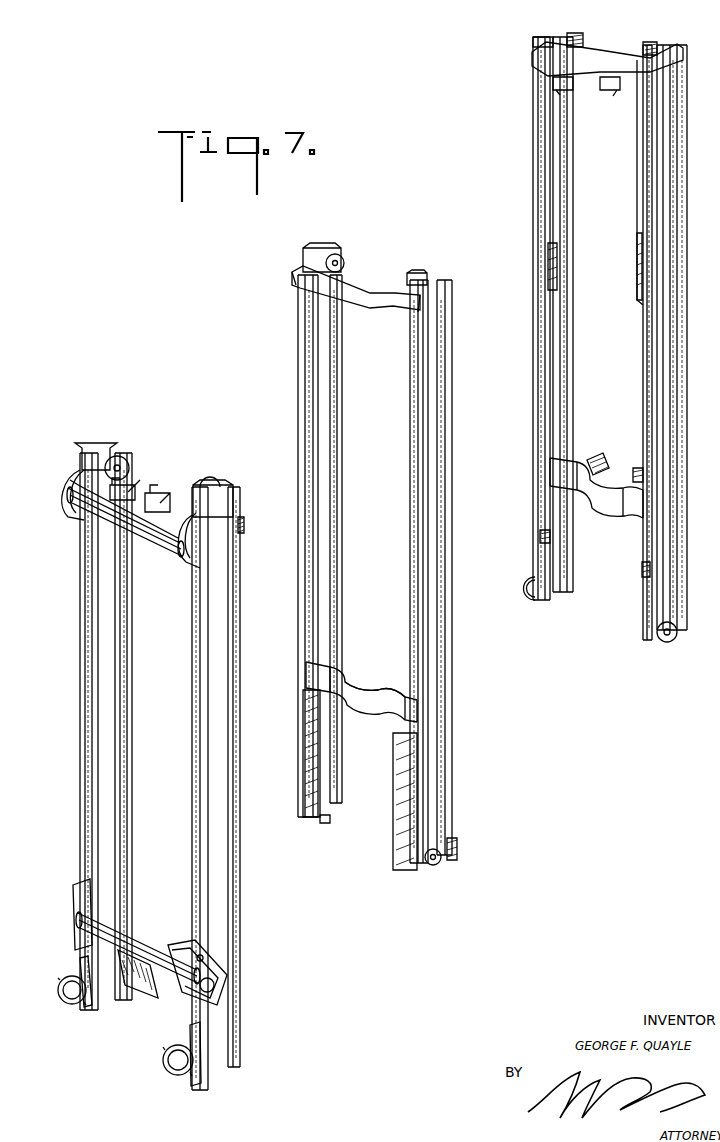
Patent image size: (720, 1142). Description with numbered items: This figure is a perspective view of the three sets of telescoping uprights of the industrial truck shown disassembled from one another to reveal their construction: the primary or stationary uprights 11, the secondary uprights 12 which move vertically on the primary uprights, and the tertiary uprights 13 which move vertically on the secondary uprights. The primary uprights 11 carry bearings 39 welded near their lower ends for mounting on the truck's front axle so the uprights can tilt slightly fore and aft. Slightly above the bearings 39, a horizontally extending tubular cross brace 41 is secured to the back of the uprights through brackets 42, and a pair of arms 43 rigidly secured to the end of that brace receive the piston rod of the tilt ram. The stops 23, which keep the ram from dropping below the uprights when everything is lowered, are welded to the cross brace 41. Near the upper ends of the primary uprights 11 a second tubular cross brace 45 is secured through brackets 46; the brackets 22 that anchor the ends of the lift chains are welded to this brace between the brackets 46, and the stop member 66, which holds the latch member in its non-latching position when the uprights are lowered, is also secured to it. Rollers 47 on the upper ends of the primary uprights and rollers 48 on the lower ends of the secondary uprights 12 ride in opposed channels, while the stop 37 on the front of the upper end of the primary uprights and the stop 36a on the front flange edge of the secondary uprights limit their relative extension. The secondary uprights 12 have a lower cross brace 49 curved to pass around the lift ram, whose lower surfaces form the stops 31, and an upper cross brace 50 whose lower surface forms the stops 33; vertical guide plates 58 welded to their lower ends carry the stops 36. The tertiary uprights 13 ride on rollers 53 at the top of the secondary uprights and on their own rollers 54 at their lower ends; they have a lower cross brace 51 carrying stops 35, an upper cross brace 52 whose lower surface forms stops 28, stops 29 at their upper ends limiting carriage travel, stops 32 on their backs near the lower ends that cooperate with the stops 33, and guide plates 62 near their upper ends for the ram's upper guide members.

The primary uprights 11 is at (187, 694).
The secondary uprights 12 is at (404, 561).
The tertiary uprights 13 is at (634, 355).
The brackets 22 is at (158, 490).
The stops 23 is at (143, 1000).
The stops 28 is at (648, 85).
The stops 29 is at (648, 46).
The stops 31 is at (370, 725).
The stops 32 is at (540, 537).
The stops 33 is at (297, 283).
The stops 35 is at (636, 468).
The stops 36 is at (388, 850).
The stop 36a is at (459, 848).
The stop 37 is at (244, 521).
The bearings 39 is at (157, 1052).
The tubular cross brace 41 is at (143, 945).
The brackets 42 is at (76, 905).
The arms 43 is at (244, 958).
The tubular cross brace 45 is at (156, 540).
The brackets 46 is at (76, 476).
The rollers 47 is at (122, 462).
The rollers 48 is at (433, 868).
The cross brace 49 is at (352, 672).
The cross brace 50 is at (366, 297).
The cross brace 51 is at (611, 515).
The cross brace 52 is at (595, 68).
The rollers 53 is at (415, 274).
The rollers 54 is at (535, 598).
The vertical guide plates 58 is at (312, 815).
The guide plates 62 is at (645, 199).
The stop member 66 is at (172, 540).